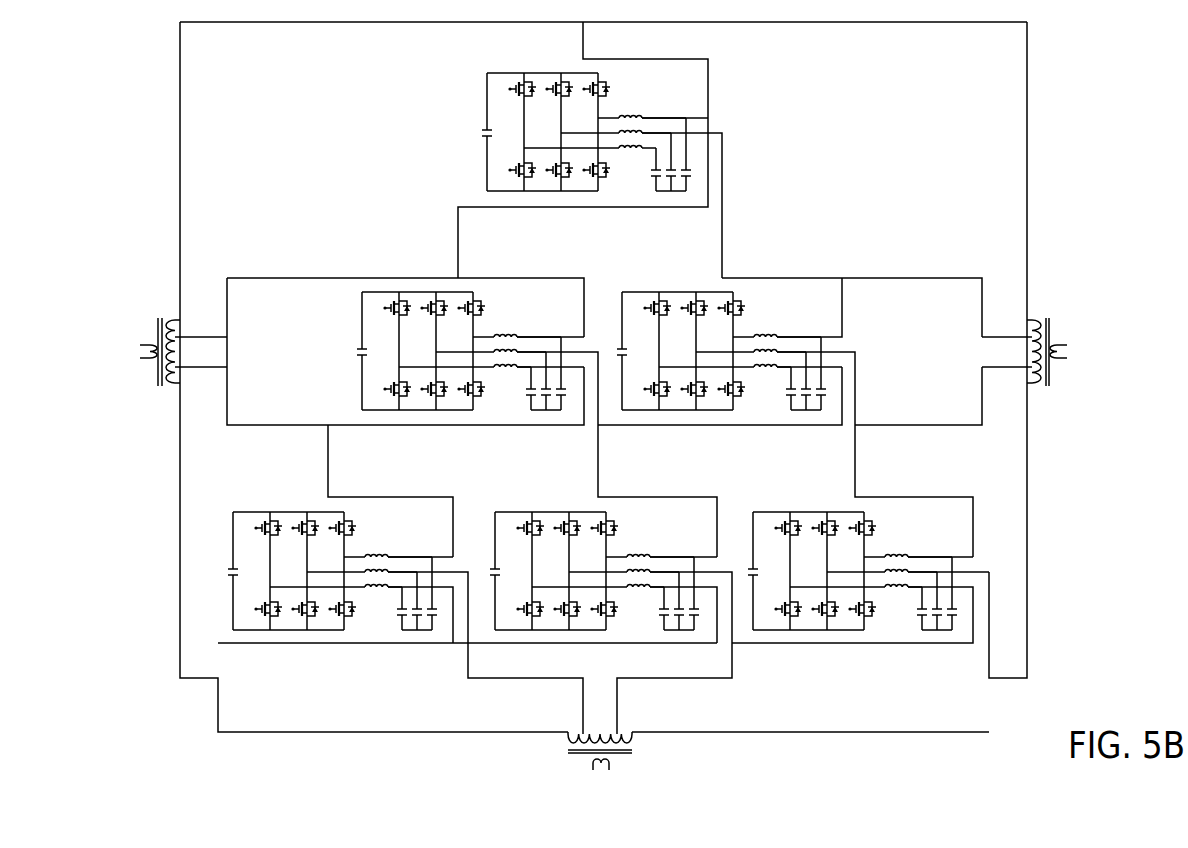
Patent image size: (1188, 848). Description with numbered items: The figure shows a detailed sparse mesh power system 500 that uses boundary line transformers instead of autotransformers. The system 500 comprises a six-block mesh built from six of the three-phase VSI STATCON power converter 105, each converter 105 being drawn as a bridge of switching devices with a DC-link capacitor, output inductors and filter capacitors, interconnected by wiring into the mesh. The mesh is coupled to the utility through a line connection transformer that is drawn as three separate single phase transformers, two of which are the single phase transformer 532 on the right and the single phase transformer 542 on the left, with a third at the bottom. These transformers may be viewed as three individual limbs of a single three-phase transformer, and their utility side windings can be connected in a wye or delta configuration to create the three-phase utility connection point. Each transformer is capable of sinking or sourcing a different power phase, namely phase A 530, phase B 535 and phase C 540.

The three-phase VSI STATCON power converter 105 is at (538, 66).
The sparse mesh power system 500 is at (1174, 77).
The phase A power phase 530 is at (1114, 366).
The single phase transformer 532 is at (1043, 306).
The phase B power phase 535 is at (541, 752).
The phase C power phase 540 is at (91, 367).
The single phase transformer 542 is at (156, 306).